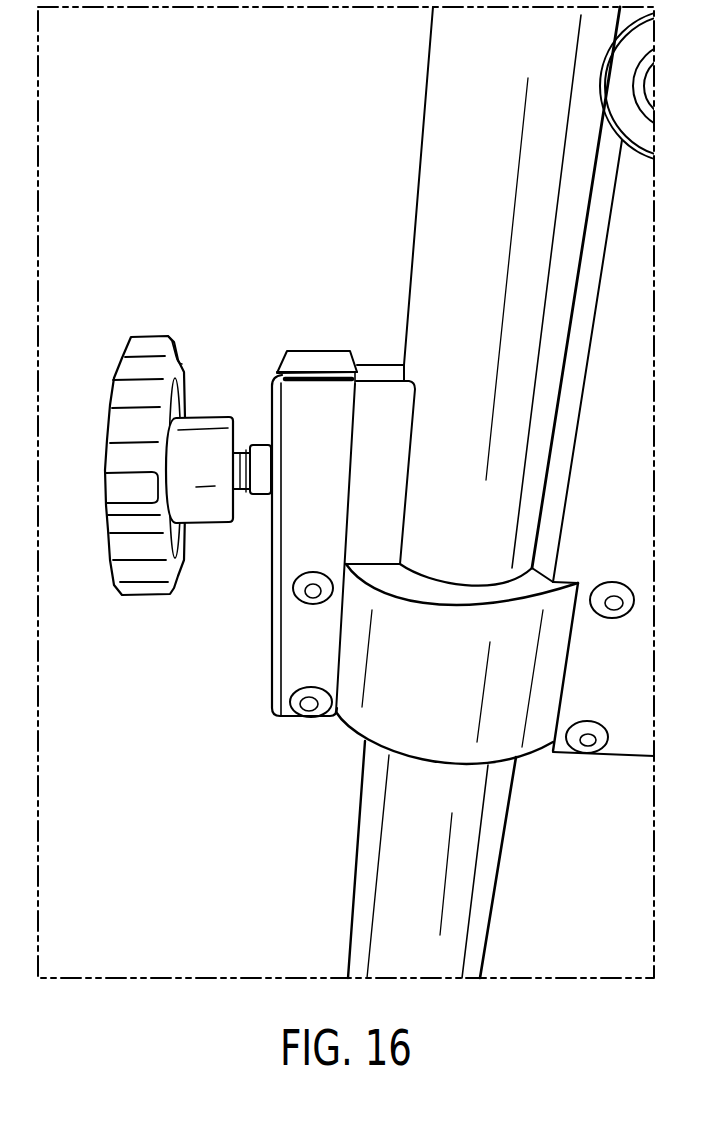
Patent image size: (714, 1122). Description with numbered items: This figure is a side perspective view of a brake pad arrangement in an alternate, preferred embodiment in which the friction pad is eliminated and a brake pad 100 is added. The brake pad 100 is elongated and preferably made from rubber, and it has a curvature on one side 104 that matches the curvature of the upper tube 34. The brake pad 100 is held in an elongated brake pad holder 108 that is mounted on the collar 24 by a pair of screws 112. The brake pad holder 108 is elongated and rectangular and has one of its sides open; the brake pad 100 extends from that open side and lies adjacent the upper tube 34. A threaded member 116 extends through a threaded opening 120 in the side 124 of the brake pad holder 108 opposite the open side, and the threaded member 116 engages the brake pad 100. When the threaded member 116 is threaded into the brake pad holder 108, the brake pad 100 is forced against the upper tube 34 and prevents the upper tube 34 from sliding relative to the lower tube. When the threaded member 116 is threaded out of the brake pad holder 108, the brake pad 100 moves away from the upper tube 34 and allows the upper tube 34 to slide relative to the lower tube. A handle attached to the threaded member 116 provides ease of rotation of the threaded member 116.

The collar 24 is at (376, 724).
The upper tube 34 is at (431, 190).
The brake pad 100 is at (386, 372).
The side 104 is at (414, 408).
The brake pad holder 108 is at (298, 407).
The screws 112 is at (300, 590).
The threaded member 116 is at (242, 497).
The threaded opening 120 is at (266, 457).
The side 124 is at (271, 690).